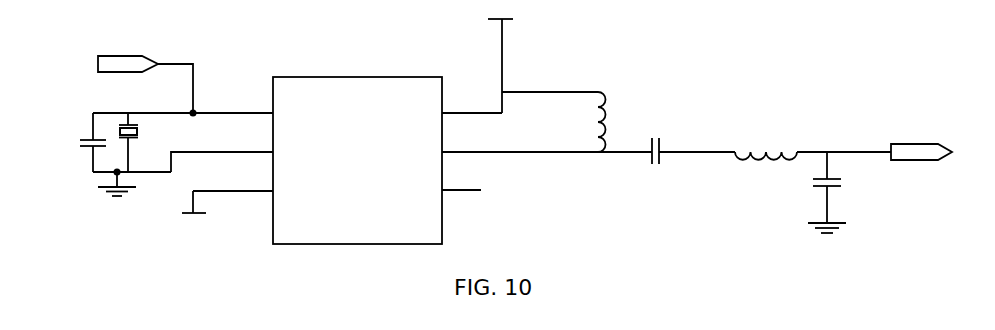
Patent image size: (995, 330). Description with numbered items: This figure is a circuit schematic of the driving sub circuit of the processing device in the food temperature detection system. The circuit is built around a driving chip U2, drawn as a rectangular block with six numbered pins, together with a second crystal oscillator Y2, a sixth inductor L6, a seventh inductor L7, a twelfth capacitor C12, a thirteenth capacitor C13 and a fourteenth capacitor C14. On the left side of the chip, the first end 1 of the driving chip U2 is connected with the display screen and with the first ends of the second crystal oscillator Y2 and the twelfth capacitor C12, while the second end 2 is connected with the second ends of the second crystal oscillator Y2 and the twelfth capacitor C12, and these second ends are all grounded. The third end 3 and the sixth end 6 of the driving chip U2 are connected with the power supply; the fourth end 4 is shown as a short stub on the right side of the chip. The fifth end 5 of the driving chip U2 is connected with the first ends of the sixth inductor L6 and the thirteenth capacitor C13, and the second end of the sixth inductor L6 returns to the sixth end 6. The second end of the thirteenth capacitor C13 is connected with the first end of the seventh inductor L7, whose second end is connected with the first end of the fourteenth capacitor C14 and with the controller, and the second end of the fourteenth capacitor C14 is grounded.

The twelfth capacitor C12 is at (76, 142).
The second crystal oscillator Y2 is at (142, 142).
The driving chip U2 is at (342, 160).
The first end of the driving chip 1 is at (261, 105).
The second end of the driving chip 2 is at (261, 143).
The third end of the driving chip 3 is at (227, 192).
The pin 4 of U2 4 is at (461, 182).
The fifth end of the driving chip 5 is at (456, 144).
The sixth end of the driving chip 6 is at (472, 106).
The sixth inductor L6 is at (614, 122).
The thirteenth capacitor C13 is at (654, 163).
The seventh inductor L7 is at (766, 143).
The fourteenth capacitor C14 is at (842, 192).